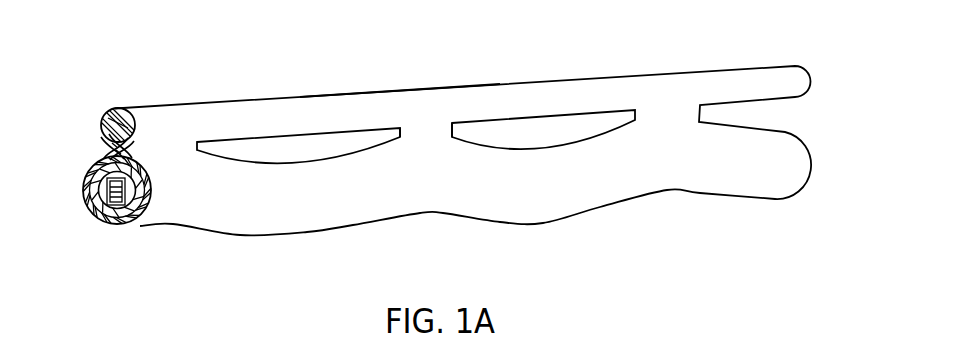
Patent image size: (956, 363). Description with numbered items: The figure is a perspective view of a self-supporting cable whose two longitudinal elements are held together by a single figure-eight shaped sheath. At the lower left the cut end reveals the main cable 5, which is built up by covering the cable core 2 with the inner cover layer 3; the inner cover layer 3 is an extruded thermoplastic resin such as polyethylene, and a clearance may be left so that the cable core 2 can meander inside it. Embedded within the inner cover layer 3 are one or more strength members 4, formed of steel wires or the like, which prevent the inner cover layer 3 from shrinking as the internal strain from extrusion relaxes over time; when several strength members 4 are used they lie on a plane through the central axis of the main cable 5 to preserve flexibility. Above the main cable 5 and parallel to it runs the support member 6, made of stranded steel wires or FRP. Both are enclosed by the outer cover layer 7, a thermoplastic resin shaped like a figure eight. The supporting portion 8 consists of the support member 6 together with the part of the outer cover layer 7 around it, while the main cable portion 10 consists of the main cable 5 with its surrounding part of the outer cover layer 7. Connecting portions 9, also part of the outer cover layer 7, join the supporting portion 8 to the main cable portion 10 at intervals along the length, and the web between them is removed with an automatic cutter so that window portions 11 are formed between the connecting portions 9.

The cable core 2 is at (135, 224).
The inner cover layer 3 is at (84, 212).
The strength members 4 is at (112, 215).
The main cable 5 is at (116, 242).
The support member 6 is at (101, 128).
The outer cover layer 7 is at (103, 124).
The supporting portion 8 is at (357, 108).
The connecting portions 9 is at (432, 133).
The main cable portion 10 is at (340, 207).
The window portions 11 is at (263, 147).